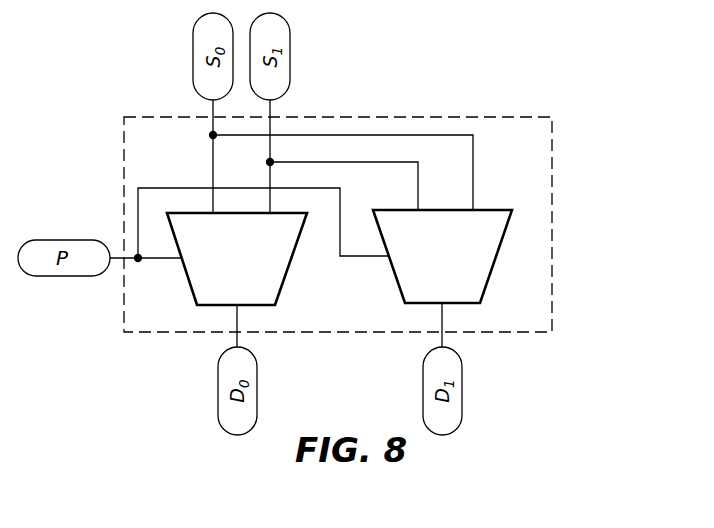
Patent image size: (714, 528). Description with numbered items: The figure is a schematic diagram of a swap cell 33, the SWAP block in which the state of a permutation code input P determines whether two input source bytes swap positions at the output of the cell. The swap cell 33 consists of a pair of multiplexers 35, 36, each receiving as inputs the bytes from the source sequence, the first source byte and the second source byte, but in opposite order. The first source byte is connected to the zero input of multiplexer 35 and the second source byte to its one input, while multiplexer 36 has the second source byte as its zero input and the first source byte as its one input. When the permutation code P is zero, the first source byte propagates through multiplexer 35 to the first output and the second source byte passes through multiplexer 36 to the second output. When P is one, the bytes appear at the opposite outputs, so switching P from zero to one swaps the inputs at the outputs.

The swap cell 33 is at (552, 202).
The multiplexer 35 is at (270, 283).
The multiplexer 36 is at (483, 263).